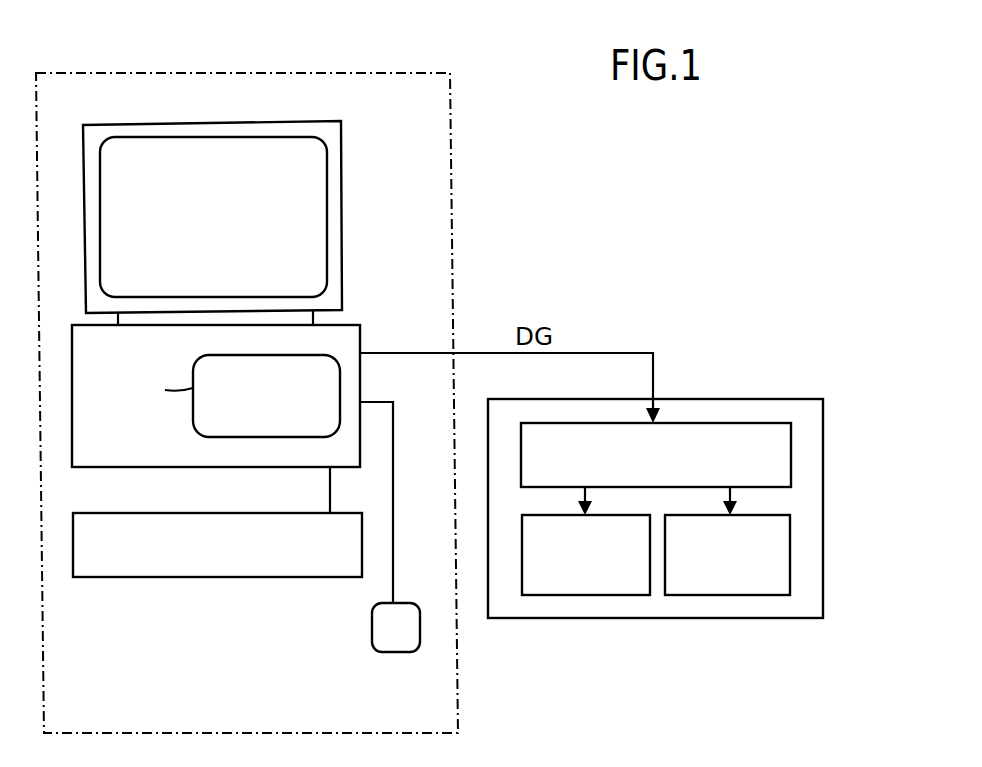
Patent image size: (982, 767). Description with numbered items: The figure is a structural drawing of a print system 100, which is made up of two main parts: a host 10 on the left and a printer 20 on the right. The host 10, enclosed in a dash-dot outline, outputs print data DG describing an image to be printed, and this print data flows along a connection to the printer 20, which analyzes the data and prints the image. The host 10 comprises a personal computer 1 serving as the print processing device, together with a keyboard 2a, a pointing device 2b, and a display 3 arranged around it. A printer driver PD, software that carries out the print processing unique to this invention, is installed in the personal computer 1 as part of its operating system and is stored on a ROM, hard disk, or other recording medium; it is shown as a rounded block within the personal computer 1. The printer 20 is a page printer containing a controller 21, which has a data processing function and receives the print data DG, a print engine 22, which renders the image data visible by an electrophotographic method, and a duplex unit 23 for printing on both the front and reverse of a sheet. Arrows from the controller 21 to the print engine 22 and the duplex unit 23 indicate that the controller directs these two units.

The print system 100 is at (689, 162).
The host 10 is at (195, 75).
The personal computer 1 is at (364, 337).
The display 3 is at (343, 208).
The keyboard 2a is at (118, 578).
The pointing device 2b is at (395, 652).
The printer 20 is at (708, 399).
The controller 21 is at (791, 458).
The print engine 22 is at (580, 595).
The duplex unit 23 is at (720, 595).